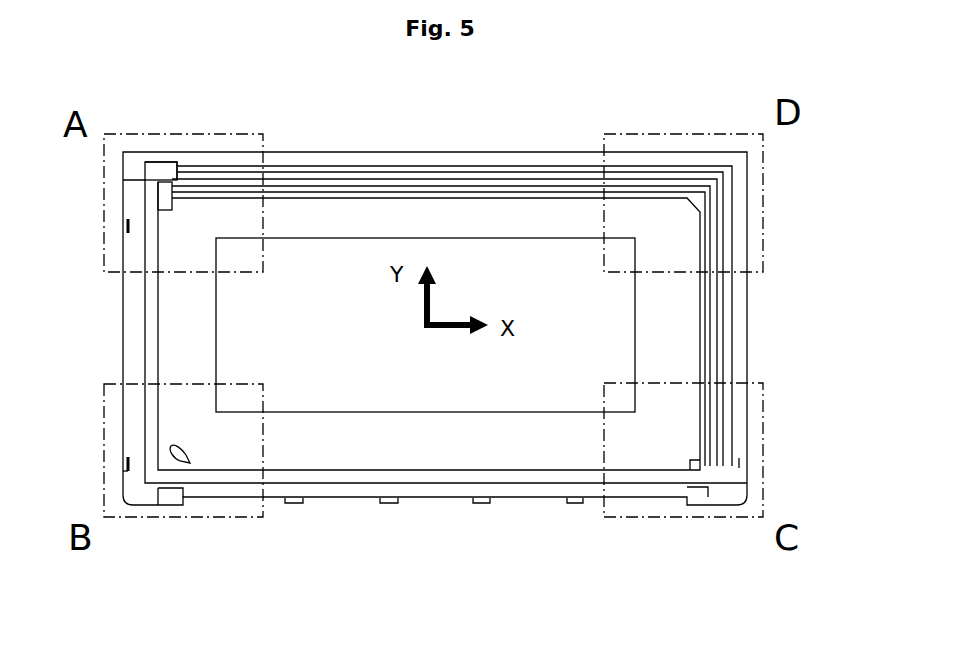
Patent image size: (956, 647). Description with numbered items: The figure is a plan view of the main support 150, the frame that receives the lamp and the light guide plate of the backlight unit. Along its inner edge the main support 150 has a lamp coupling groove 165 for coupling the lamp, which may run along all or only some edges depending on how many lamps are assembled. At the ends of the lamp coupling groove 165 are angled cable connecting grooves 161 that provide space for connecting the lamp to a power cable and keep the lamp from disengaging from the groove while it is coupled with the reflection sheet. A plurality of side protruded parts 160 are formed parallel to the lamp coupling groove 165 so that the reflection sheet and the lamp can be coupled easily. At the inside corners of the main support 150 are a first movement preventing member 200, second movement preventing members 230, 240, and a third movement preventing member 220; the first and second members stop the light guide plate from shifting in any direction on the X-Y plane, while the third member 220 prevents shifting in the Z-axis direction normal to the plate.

The main support 150 is at (172, 48).
The side protruded part 160 is at (135, 257).
The cable connecting groove 161 is at (162, 170).
The lamp coupling groove 165 is at (152, 292).
The first movement preventing member 200 is at (190, 463).
The third movement preventing member 220 is at (702, 193).
The second movement preventing member 230 is at (165, 207).
The second movement preventing member 240 is at (703, 458).